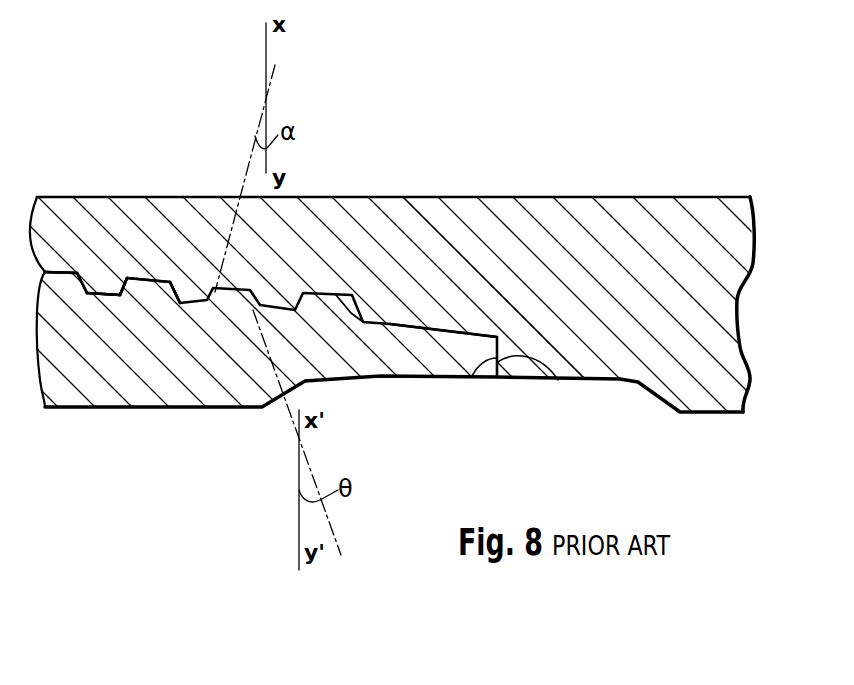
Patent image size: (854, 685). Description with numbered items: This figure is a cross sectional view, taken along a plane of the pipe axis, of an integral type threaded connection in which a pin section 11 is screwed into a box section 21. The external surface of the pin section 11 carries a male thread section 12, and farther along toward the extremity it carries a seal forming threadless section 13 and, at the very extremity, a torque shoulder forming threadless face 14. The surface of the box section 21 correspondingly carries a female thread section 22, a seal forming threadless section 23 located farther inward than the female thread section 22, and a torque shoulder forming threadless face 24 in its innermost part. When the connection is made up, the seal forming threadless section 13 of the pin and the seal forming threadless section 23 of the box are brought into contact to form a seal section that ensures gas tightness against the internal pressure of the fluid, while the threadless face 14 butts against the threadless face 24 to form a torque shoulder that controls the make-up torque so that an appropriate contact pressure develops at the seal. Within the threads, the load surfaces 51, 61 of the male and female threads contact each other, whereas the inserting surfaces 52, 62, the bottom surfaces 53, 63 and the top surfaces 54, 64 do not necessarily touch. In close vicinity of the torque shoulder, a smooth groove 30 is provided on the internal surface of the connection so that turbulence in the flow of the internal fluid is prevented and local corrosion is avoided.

The pin section 11 is at (258, 373).
The male thread section 12 is at (148, 280).
The seal forming threadless section 13 is at (420, 328).
The torque shoulder forming threadless face 14 is at (465, 378).
The box section 21 is at (328, 207).
The female thread section 22 is at (102, 287).
The seal forming threadless section 23 is at (430, 323).
The torque shoulder forming threadless face 24 is at (560, 380).
The smooth groove 30 is at (477, 398).
The load surface of male thread 51 is at (128, 283).
The inserting surface of male thread 52 is at (172, 300).
The bottom surface of male thread 53 is at (100, 298).
The top surface of male thread 54 is at (64, 277).
The load surface of female thread 61 is at (128, 283).
The inserting surface of female thread 62 is at (172, 300).
The bottom surface of female thread 63 is at (100, 298).
The top surface of female thread 64 is at (64, 277).